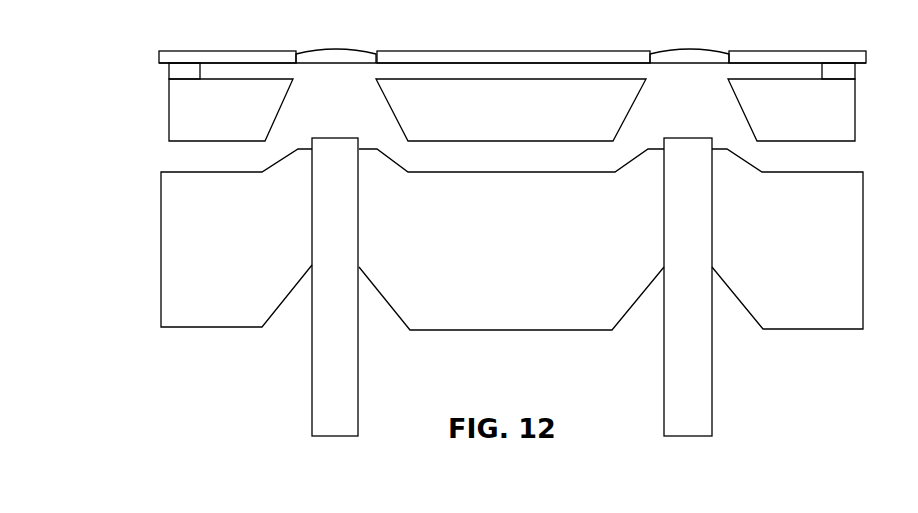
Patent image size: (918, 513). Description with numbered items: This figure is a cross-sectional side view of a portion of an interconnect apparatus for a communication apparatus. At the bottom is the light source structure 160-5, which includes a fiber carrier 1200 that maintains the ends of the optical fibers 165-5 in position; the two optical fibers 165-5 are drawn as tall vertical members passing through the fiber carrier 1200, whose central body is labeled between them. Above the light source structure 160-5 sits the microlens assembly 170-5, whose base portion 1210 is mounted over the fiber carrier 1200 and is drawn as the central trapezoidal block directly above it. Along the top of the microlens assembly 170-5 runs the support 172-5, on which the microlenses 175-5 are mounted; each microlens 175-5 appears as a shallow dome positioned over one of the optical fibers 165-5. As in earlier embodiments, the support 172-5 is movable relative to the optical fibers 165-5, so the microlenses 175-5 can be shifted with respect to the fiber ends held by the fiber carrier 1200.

The microlens assembly 170-5 is at (136, 89).
The support 172-5 is at (472, 57).
The microlenses 175-5 is at (350, 52).
The base portion 1210 is at (532, 120).
The light source structure 160-5 is at (130, 191).
The fiber carrier 1200 is at (538, 251).
The optical fibers 165-5 is at (348, 147).